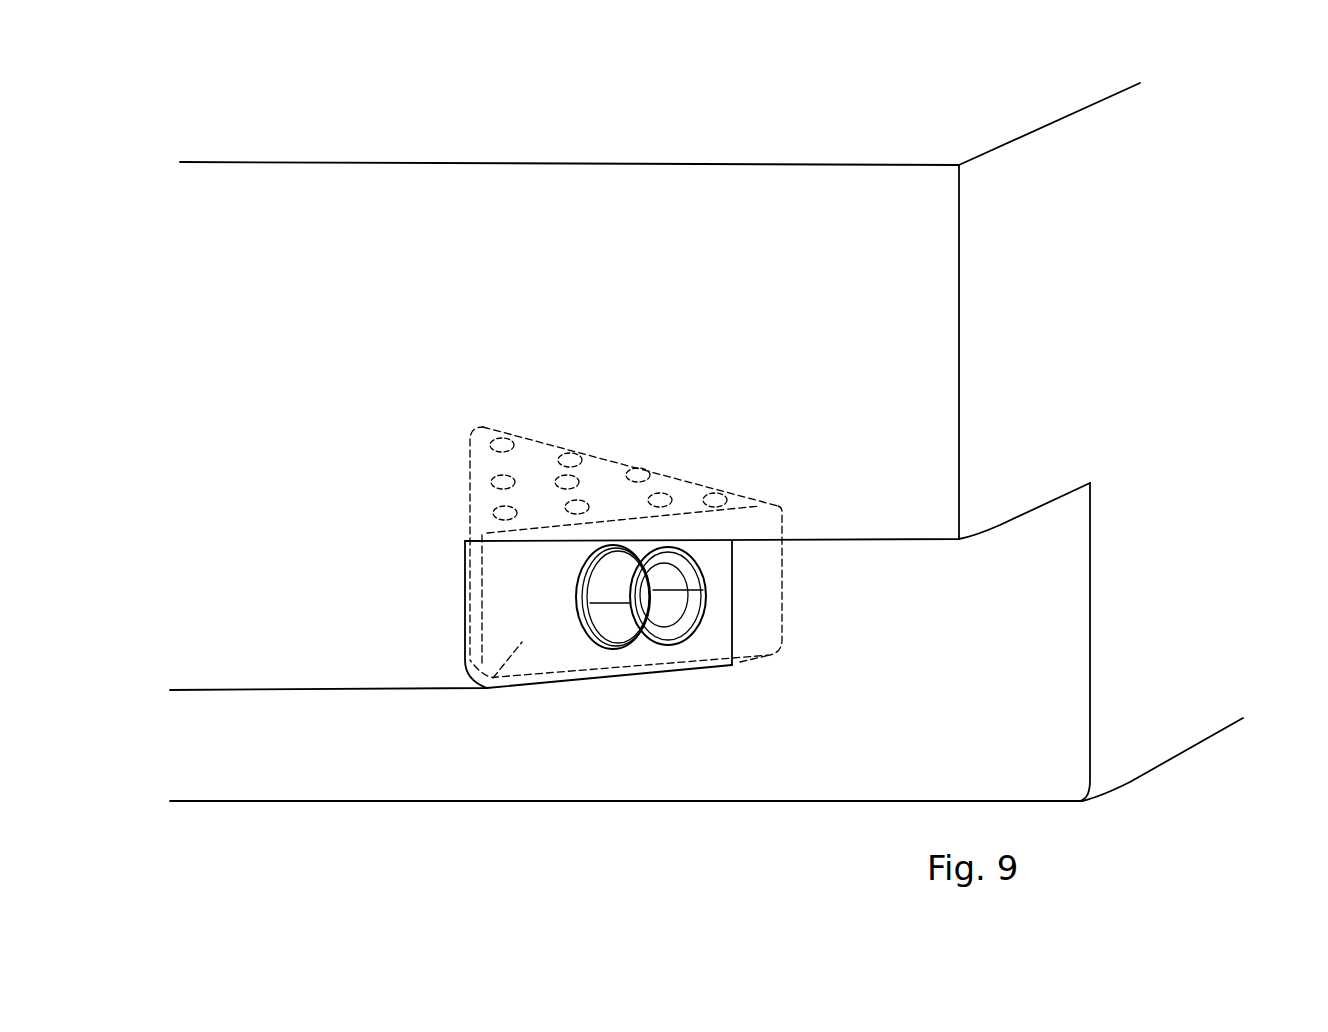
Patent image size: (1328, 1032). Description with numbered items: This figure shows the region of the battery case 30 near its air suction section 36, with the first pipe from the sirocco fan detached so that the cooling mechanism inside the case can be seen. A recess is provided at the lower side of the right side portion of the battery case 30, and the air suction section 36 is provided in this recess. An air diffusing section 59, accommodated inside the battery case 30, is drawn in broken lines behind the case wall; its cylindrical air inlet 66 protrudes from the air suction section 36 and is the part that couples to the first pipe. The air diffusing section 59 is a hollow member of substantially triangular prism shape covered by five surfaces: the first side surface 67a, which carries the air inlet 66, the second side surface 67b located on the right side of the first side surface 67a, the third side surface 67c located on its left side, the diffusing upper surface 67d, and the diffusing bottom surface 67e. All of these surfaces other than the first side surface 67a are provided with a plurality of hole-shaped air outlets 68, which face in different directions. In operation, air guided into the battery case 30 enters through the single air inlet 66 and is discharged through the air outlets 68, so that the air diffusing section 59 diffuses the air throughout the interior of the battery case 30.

The battery case 30 is at (1145, 795).
The air suction section 36 is at (590, 627).
The air inlet 66 is at (635, 617).
The air diffusing section 59 is at (740, 662).
The first side surface 67a is at (493, 678).
The second side surface 67b is at (617, 458).
The third side surface 67c is at (470, 518).
The diffusing upper surface 67d is at (537, 452).
The diffusing bottom surface 67e is at (698, 665).
The air outlets 68 is at (717, 497).